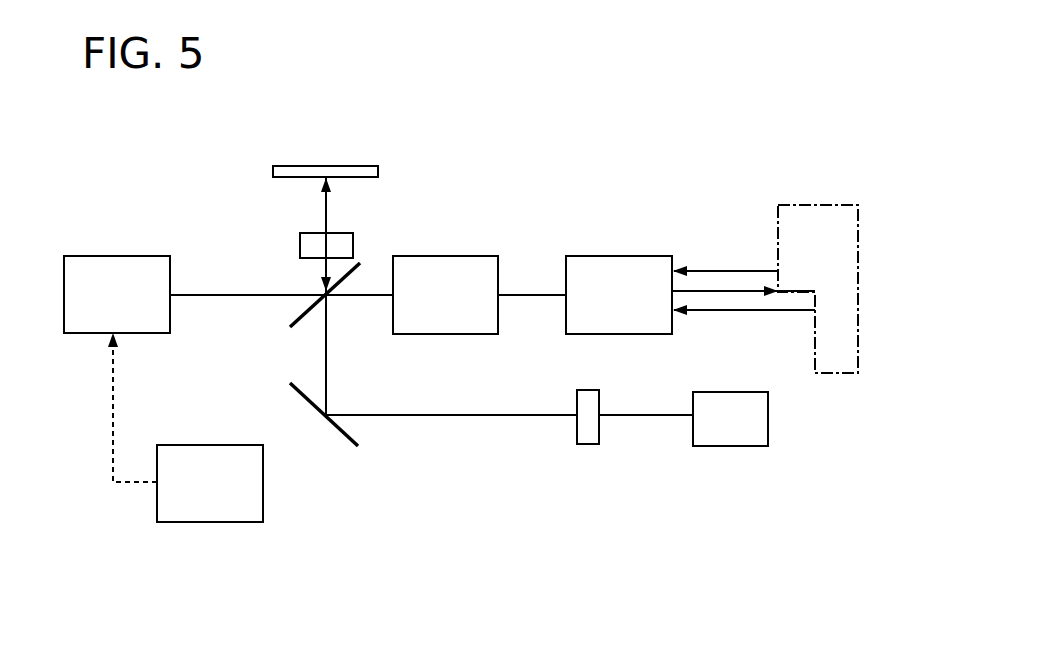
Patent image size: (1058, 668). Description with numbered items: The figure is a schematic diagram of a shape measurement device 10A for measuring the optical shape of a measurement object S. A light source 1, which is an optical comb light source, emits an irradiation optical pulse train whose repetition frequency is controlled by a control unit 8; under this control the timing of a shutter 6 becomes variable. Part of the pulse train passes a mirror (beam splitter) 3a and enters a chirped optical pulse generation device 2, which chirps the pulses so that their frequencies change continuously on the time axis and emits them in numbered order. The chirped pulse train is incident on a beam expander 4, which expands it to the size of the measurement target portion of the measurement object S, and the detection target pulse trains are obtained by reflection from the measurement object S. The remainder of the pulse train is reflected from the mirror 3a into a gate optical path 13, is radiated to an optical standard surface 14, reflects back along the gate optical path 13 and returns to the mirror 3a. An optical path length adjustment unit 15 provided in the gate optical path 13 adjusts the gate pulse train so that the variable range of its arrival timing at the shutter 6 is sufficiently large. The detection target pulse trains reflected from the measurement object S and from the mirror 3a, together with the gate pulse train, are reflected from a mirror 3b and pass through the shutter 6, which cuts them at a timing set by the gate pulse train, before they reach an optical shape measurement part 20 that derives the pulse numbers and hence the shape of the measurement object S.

The light source 1 is at (133, 256).
The chirped optical pulse generation device 2 is at (472, 256).
The mirror (beam splitter) 3a is at (292, 319).
The mirror 3b is at (290, 388).
The beam expander 4 is at (634, 256).
The shutter 6 is at (590, 389).
The control unit 8 is at (210, 522).
The shape measurement device 10A is at (681, 158).
The gate optical path 13 is at (308, 220).
The optical standard surface 14 is at (367, 166).
The optical path length adjustment unit 15 is at (353, 245).
The optical shape measurement part 20 is at (737, 392).
The measurement object S is at (812, 205).